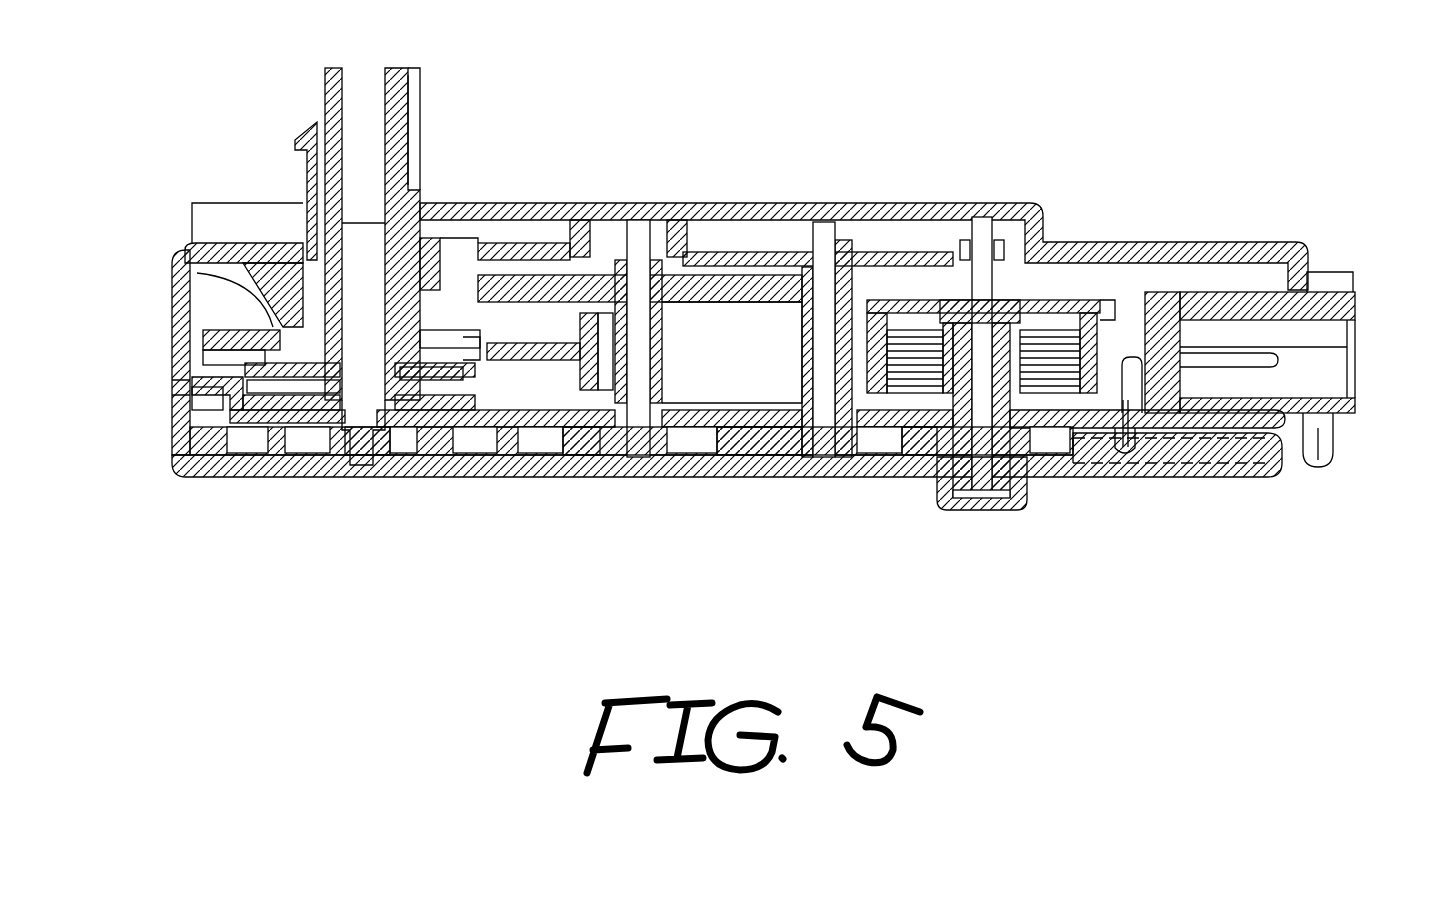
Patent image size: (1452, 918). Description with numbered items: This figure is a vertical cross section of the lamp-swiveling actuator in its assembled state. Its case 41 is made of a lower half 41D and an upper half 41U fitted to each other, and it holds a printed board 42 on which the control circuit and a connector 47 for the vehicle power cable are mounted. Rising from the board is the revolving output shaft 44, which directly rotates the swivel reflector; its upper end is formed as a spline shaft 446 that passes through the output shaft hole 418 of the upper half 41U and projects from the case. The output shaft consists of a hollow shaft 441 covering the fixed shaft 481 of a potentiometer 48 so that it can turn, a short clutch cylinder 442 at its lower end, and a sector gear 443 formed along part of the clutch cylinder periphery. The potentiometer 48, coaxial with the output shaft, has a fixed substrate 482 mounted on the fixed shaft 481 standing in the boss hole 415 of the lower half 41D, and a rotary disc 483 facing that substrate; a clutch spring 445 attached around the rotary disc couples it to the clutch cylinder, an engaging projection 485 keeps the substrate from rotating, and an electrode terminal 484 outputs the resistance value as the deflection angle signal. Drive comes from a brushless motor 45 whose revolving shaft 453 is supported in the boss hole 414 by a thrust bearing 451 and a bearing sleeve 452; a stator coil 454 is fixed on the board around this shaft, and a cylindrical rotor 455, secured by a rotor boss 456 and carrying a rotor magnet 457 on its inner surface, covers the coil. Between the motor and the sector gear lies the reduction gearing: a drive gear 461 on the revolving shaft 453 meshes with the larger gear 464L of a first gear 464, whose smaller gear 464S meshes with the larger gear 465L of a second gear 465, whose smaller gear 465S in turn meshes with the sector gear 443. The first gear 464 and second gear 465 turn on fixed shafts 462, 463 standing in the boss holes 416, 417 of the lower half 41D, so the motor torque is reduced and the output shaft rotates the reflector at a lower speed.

The case 41 is at (1313, 246).
The upper half 41U is at (1252, 242).
The lower half 41D is at (1270, 478).
The printed board 42 is at (716, 430).
The revolving output shaft 44 is at (321, 105).
The hollow shaft 441 is at (305, 232).
The clutch cylinder 442 is at (187, 328).
The sector gear 443 is at (588, 285).
The clutch spring 445 is at (485, 345).
The spline shaft 446 is at (412, 133).
The brushless motor 45 is at (1093, 293).
The thrust bearing 451 is at (990, 480).
The bearing sleeve 452 is at (1045, 478).
The revolving shaft 453 is at (975, 500).
The stator coil 454 is at (1118, 298).
The rotor 455 is at (942, 215).
The rotor boss 456 is at (1008, 278).
The rotor magnet 457 is at (870, 372).
The drive gear 461 is at (1012, 270).
The fixed shaft 462 is at (738, 428).
The fixed shaft 463 is at (640, 250).
The first gear 464 is at (880, 237).
The larger gear 464L is at (750, 262).
The smaller gear 464S is at (855, 262).
The second gear 465 is at (548, 285).
The larger gear 465L is at (733, 285).
The smaller gear 465S is at (685, 372).
The connector 47 is at (1345, 307).
The potentiometer 48 is at (189, 388).
The fixed shaft 481 is at (360, 250).
The fixed substrate 482 is at (398, 475).
The rotary disc 483 is at (203, 325).
The electrode terminal 484 is at (537, 458).
The engaging projection 485 is at (205, 437).
The boss hole 414 is at (935, 442).
The boss hole 415 is at (285, 455).
The boss hole 416 is at (790, 440).
The boss hole 417 is at (590, 440).
The output shaft hole 418 is at (425, 245).